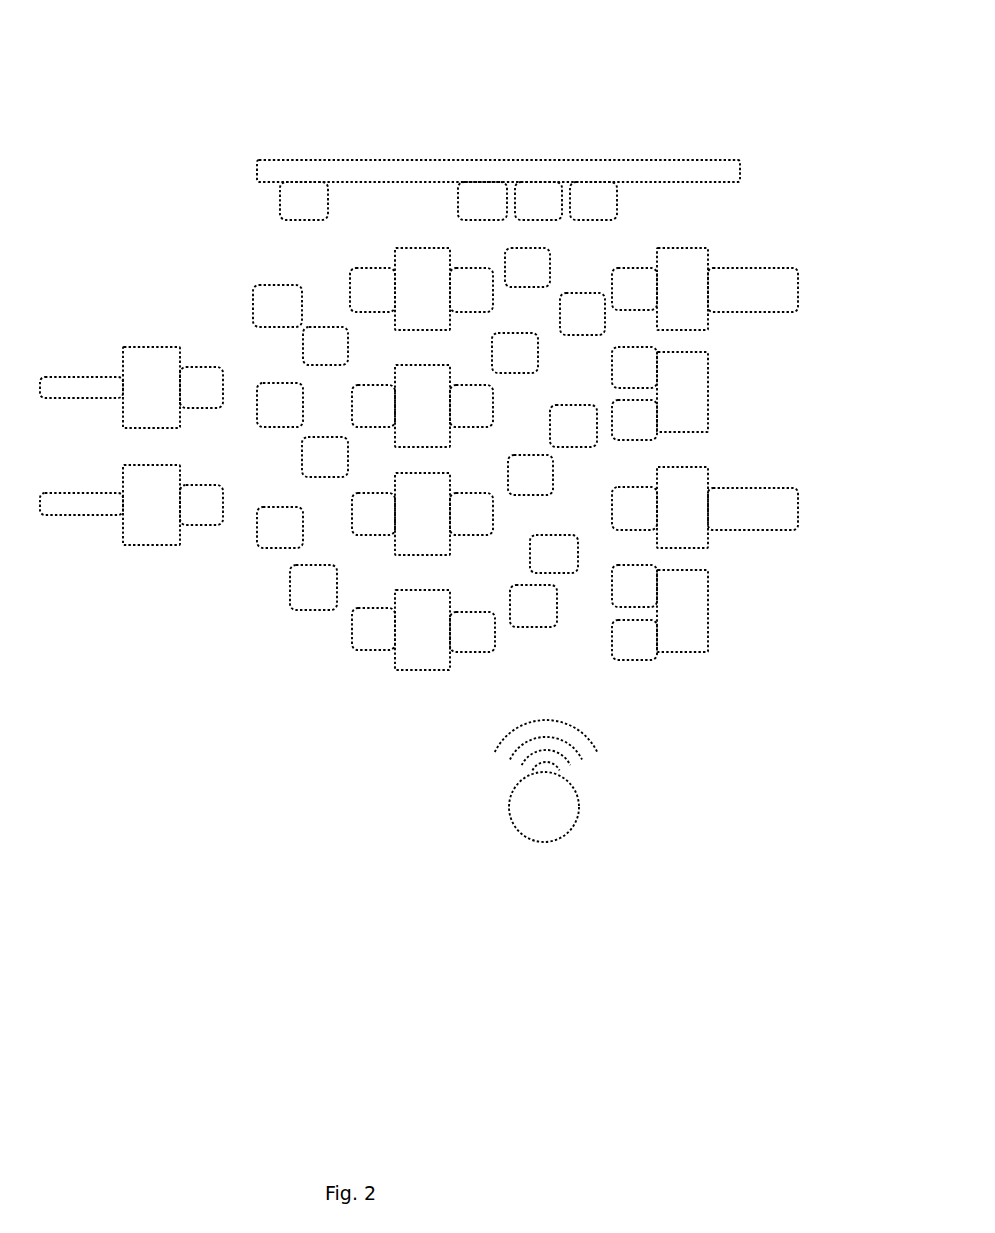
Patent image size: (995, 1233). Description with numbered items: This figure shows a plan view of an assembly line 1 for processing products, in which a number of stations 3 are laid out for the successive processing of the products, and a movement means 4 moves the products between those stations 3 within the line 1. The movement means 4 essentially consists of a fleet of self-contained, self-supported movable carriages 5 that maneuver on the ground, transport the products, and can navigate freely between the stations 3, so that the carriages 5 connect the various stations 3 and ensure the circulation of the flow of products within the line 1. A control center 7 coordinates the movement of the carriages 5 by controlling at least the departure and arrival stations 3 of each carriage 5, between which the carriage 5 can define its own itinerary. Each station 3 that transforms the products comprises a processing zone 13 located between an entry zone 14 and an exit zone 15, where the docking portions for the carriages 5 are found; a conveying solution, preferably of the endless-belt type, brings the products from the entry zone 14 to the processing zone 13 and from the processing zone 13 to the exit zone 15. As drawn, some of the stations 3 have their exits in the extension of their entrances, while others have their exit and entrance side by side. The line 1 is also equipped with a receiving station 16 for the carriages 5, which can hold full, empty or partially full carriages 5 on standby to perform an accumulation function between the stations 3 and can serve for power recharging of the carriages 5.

The assembly line 1 is at (435, 80).
The station 3 is at (143, 573).
The movement means 4 is at (155, 760).
The movable carriage 5 is at (273, 305).
The control center 7 is at (544, 810).
The processing zone 13 is at (155, 368).
The entry zone 14 is at (75, 365).
The exit zone 15 is at (200, 338).
The receiving station 16 is at (303, 148).